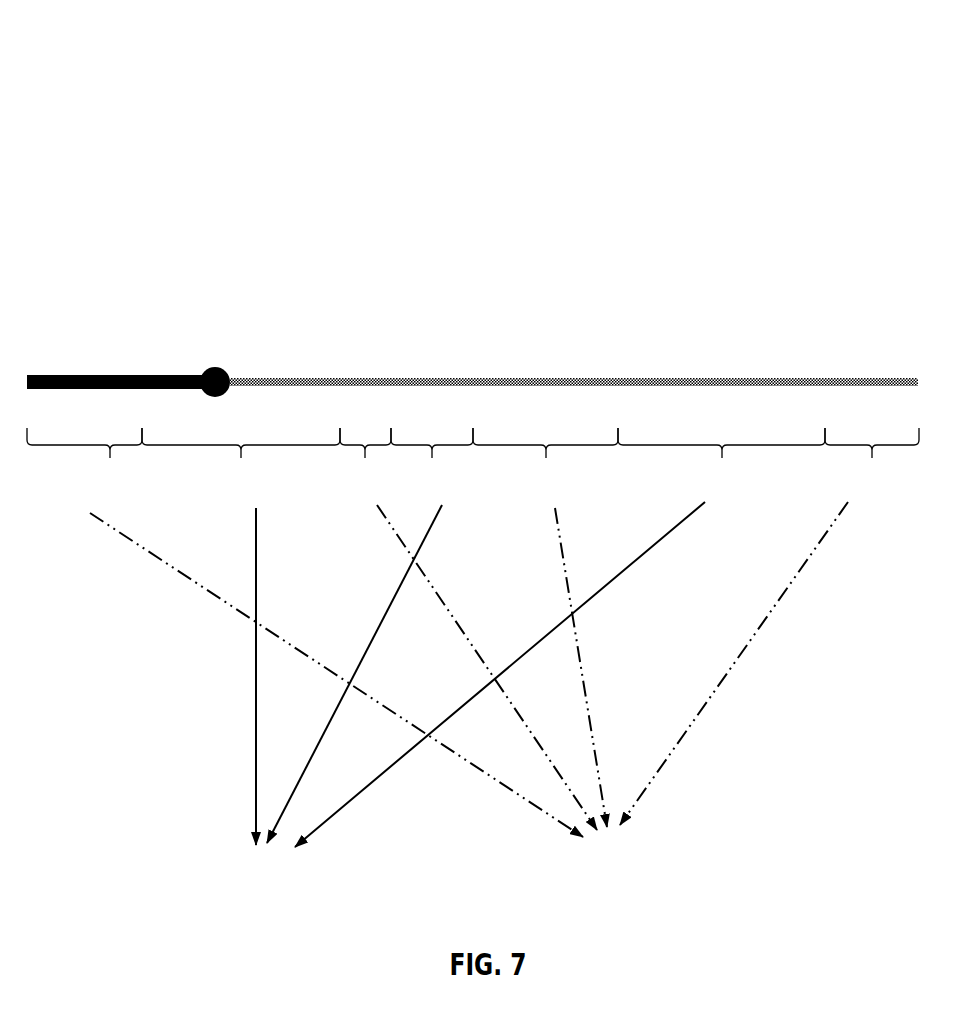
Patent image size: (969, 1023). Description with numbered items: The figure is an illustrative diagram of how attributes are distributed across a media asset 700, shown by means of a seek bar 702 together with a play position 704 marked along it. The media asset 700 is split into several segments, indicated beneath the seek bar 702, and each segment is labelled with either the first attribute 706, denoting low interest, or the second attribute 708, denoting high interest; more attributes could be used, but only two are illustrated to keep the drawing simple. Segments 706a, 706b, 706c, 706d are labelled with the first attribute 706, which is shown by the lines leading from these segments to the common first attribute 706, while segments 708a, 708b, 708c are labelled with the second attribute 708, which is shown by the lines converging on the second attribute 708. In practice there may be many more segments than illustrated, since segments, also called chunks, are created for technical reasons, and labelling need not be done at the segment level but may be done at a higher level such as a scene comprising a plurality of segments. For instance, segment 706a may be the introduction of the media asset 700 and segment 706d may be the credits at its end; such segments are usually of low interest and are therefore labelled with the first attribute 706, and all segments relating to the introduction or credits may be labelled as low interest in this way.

The media asset 700 is at (253, 117).
The seek bar 702 is at (533, 365).
The play position 704 is at (217, 357).
The segment 706a is at (316, 651).
The segment 706b is at (465, 647).
The segment 706c is at (566, 646).
The segment 706d is at (761, 645).
The segment 708a is at (252, 655).
The segment 708b is at (369, 654).
The segment 708c is at (526, 656).
The first attribute 706 is at (601, 850).
The second attribute 708 is at (274, 865).